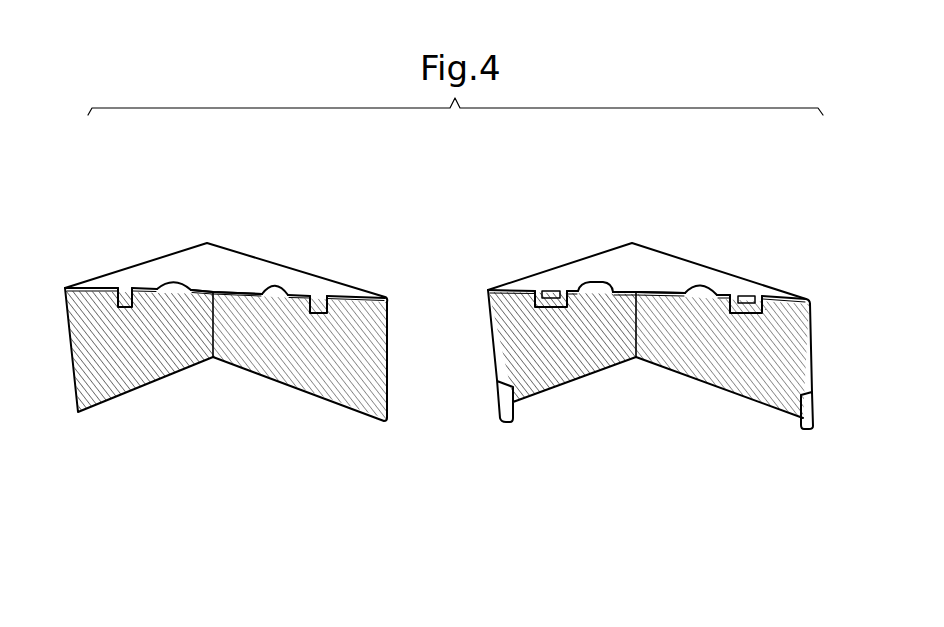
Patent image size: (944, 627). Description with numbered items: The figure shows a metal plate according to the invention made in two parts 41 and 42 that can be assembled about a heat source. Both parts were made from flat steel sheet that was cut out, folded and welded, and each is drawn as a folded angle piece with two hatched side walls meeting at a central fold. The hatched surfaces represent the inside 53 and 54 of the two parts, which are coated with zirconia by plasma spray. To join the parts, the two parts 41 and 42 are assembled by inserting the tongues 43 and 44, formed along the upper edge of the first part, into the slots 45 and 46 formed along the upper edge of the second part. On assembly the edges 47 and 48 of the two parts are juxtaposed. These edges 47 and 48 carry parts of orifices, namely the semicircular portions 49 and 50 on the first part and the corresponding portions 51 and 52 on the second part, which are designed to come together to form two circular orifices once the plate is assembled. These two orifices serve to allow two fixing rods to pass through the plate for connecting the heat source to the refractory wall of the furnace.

The first part of metal plate 41 is at (305, 236).
The second part of metal plate 42 is at (595, 214).
The tongue 43 is at (132, 322).
The tongue 44 is at (318, 324).
The slot 45 is at (552, 310).
The slot 46 is at (740, 321).
The edge 47 is at (205, 284).
The edge 48 is at (646, 282).
The orifice part 49 is at (175, 277).
The orifice part 50 is at (276, 302).
The orifice part 51 is at (597, 300).
The orifice part 52 is at (699, 304).
The inside of plate part 53 is at (237, 333).
The inside of plate part 54 is at (762, 381).